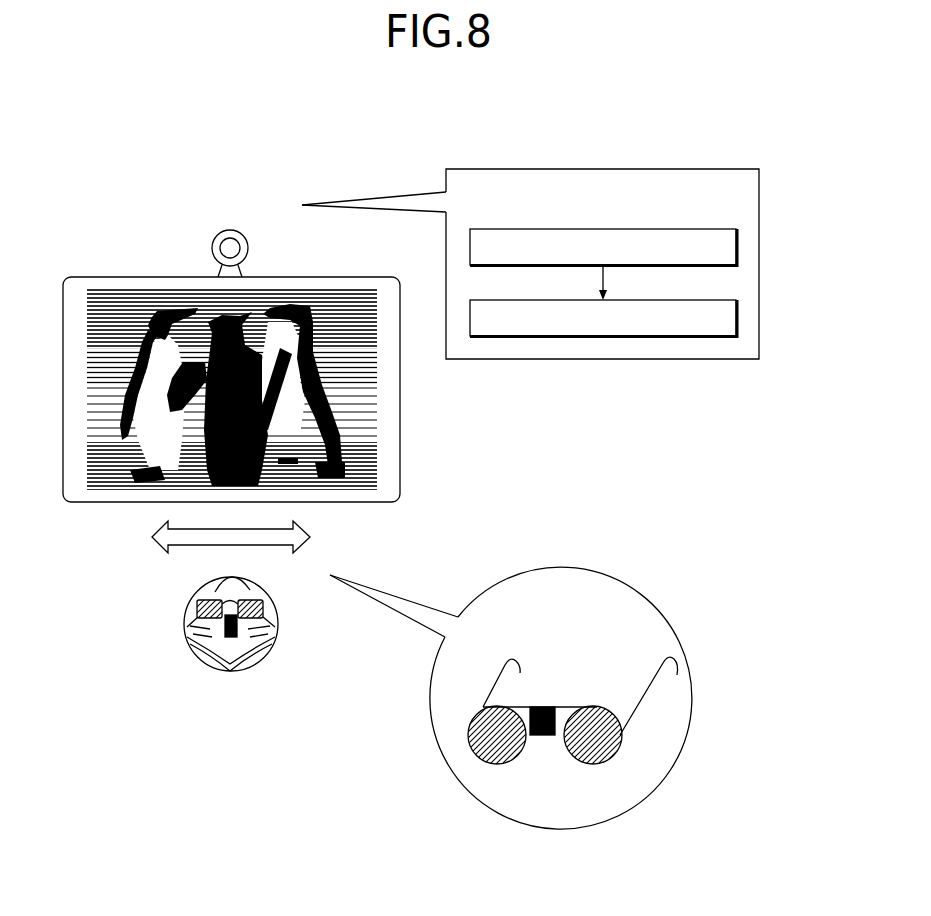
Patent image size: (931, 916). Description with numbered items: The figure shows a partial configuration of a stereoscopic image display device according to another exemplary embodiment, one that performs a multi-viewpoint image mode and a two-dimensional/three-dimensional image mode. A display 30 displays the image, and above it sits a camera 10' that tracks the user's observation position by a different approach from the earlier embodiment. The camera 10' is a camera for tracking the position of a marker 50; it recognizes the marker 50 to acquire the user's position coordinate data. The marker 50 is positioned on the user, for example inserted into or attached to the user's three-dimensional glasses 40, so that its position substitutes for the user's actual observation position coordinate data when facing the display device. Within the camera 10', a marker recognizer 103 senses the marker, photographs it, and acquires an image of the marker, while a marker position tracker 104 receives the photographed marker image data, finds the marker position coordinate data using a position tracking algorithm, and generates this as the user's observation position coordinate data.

The camera 10' is at (514, 264).
The marker recognizer 103 is at (737, 247).
The marker position tracker 104 is at (737, 319).
The display 30 is at (400, 466).
The 3D glasses 40 is at (438, 692).
The marker 50 is at (234, 640).